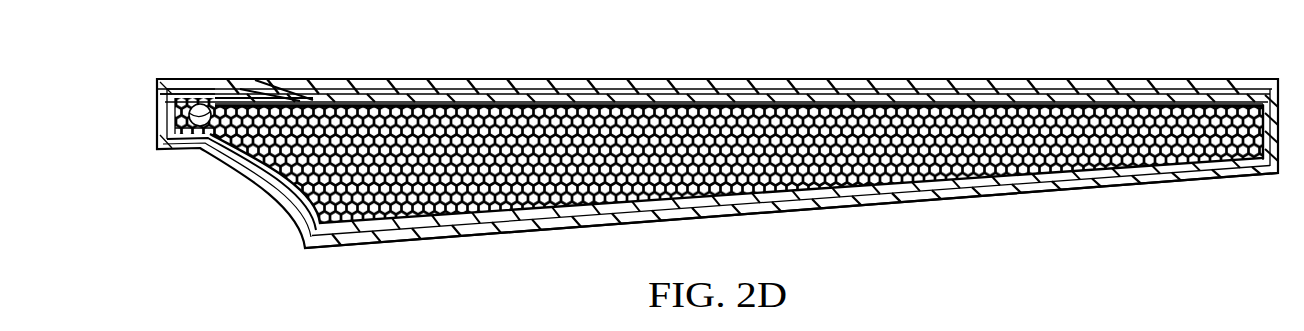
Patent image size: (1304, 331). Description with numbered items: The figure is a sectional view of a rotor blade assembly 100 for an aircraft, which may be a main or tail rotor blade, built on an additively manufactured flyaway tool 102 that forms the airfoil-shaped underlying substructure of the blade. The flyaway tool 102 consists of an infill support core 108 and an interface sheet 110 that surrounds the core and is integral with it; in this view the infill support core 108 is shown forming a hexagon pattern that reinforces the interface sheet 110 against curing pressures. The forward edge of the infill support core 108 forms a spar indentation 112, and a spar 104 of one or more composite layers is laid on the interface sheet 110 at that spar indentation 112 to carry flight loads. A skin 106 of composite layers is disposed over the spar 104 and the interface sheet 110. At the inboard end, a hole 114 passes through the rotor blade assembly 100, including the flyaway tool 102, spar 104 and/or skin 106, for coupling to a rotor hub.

The rotor blade assembly 100 is at (752, 58).
The additively manufactured flyaway tool 102 is at (1063, 170).
The spar 104 is at (482, 95).
The skin 106 is at (638, 79).
The infill support core 108 is at (900, 163).
The interface sheet 110 is at (879, 103).
The spar indentation 112 is at (988, 105).
The hole 114 is at (212, 97).